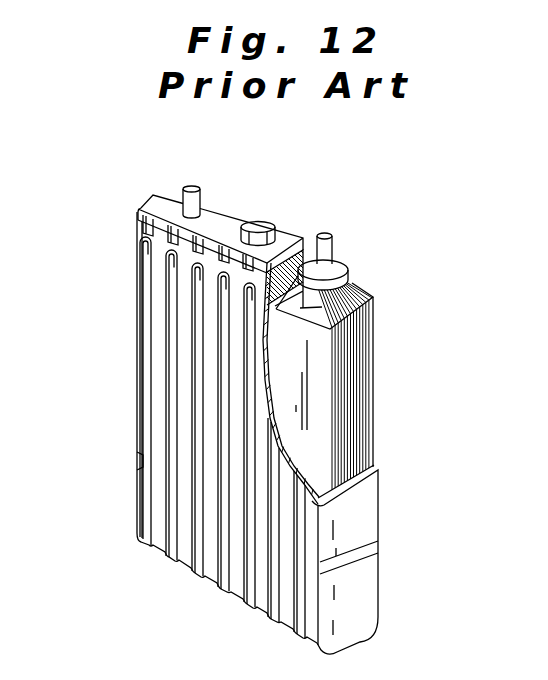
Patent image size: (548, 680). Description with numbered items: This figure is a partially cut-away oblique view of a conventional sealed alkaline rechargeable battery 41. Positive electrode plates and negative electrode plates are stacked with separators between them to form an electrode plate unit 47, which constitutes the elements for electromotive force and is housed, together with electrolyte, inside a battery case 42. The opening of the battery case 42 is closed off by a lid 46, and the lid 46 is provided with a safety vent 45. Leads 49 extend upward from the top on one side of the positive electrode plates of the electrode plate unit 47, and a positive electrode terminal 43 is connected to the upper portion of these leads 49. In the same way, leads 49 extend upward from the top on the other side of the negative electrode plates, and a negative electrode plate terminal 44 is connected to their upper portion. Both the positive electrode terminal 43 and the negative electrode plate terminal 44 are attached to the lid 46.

The sealed alkaline rechargeable battery 41 is at (135, 280).
The battery case 42 is at (364, 502).
The positive electrode terminal 43 is at (185, 184).
The negative electrode plate terminal 44 is at (325, 237).
The safety vent 45 is at (258, 228).
The lid 46 is at (220, 224).
The electrode plate unit 47 is at (362, 342).
The leads 49 is at (352, 298).